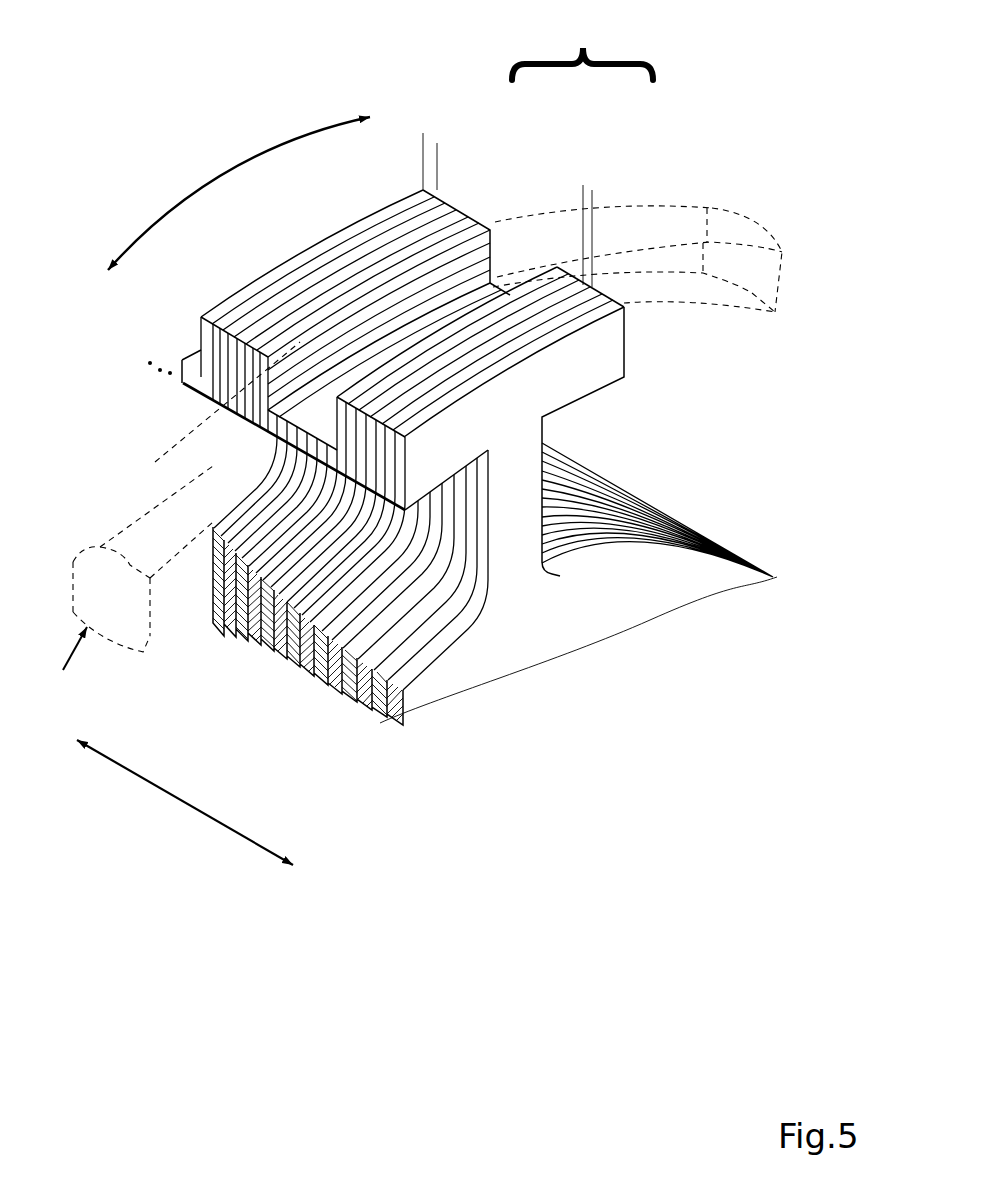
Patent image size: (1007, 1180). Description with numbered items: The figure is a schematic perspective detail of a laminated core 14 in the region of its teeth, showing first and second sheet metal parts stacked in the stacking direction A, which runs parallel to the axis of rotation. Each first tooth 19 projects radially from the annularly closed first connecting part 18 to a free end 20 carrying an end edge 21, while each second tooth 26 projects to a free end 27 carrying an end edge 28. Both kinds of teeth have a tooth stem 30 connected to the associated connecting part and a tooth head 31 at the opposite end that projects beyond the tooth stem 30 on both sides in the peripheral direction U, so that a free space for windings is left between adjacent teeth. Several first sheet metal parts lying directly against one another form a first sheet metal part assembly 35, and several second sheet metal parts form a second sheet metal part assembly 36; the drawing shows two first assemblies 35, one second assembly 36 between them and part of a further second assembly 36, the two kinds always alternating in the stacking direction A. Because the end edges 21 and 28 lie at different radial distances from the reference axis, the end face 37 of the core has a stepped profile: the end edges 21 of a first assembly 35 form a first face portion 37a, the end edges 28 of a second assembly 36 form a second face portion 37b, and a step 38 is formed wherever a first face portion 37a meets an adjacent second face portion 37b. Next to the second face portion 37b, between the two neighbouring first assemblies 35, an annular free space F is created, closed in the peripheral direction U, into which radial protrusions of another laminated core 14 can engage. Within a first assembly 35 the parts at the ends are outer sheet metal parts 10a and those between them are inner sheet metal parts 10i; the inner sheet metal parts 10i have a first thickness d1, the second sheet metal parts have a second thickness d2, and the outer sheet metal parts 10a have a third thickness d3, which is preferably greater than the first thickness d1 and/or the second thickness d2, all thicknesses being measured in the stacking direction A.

The outer sheet metal part 10a is at (455, 570).
The inner sheet metal part 10i is at (473, 540).
The laminated core 14 is at (697, 645).
The first connecting part 18 is at (262, 632).
The first tooth 19 is at (222, 391).
The free end 20 is at (468, 313).
The end edge 21 is at (288, 280).
The second tooth 26 is at (280, 462).
The free end 27 is at (318, 271).
The end edge 28 is at (352, 368).
The tooth stem 30 is at (527, 538).
The tooth head 31 is at (590, 390).
The first sheet metal part assembly 35 is at (468, 212).
The second sheet metal part assembly 36 is at (297, 377).
The end face 37 is at (436, 226).
The first face portion 37a is at (437, 232).
The second face portion 37b is at (447, 303).
The step 38 is at (497, 252).
The first thickness d1 is at (566, 189).
The second thickness d2 is at (212, 615).
The third thickness d3 is at (452, 162).
The peripheral direction U is at (242, 172).
The stacking direction A is at (188, 807).
The free space F is at (68, 667).